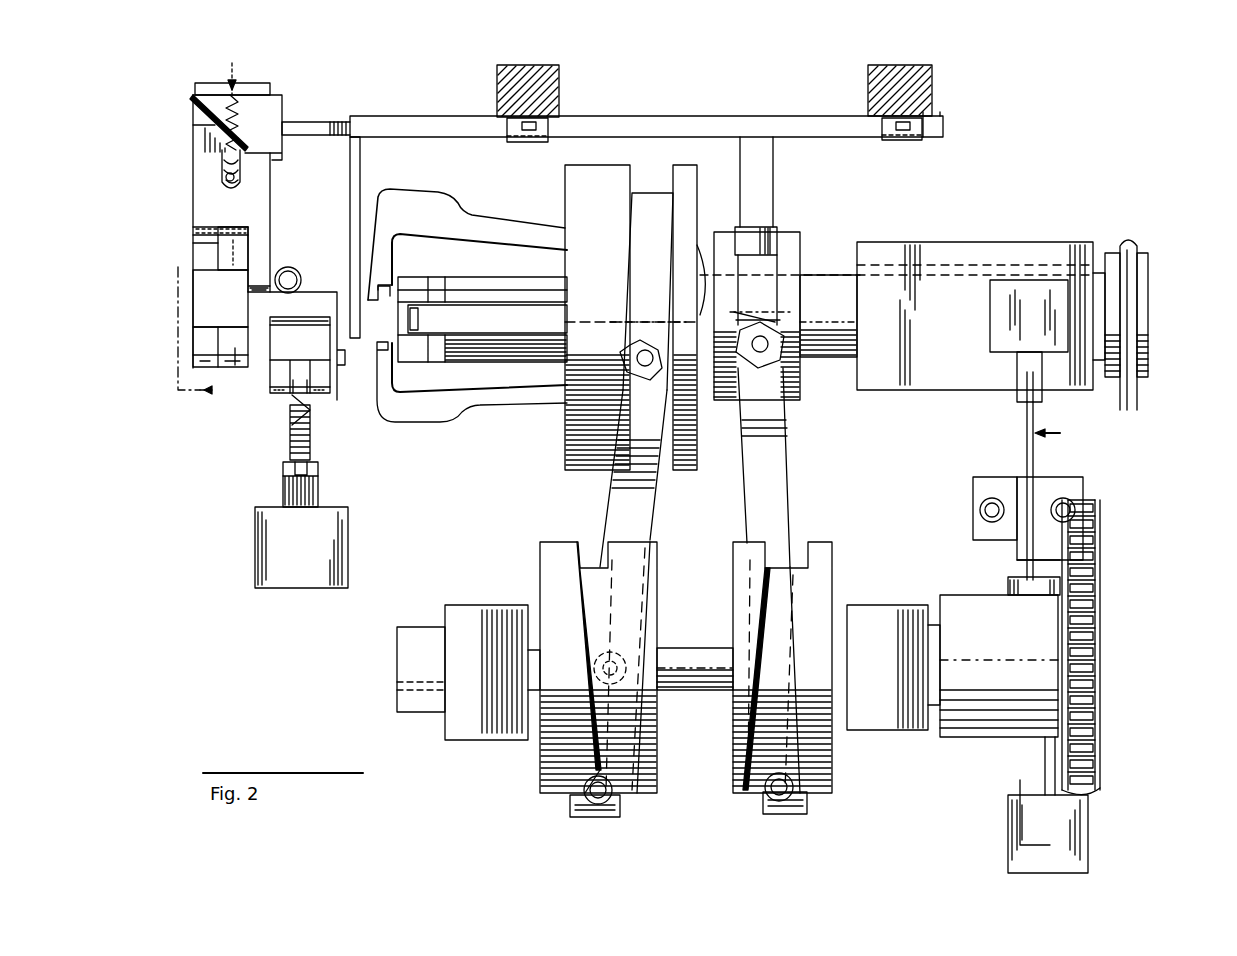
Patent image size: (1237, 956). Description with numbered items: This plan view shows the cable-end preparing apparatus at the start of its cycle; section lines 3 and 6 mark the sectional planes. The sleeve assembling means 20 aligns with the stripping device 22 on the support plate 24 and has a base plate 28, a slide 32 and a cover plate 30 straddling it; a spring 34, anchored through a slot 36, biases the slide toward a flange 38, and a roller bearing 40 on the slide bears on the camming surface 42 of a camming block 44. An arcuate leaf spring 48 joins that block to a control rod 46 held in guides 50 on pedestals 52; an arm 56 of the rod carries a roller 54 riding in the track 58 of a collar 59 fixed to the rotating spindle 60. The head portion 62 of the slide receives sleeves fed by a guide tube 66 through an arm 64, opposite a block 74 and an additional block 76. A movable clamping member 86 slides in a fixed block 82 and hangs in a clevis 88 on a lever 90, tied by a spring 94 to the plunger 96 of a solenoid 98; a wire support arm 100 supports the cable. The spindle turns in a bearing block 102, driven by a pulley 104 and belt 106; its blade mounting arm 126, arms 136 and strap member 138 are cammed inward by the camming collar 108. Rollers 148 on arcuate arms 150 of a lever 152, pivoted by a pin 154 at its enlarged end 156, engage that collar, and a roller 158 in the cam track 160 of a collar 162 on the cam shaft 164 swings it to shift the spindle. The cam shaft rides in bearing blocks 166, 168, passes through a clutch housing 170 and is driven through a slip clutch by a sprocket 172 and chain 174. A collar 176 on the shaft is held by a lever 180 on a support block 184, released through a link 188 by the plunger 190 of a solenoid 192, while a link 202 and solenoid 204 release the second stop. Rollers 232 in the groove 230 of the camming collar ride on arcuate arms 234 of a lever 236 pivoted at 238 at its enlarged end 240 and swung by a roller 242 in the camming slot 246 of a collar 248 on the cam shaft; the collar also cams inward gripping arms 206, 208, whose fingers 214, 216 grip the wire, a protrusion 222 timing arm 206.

The section line 3- 3 is at (203, 333).
The inner conductor 6 is at (1047, 634).
The sleeve assembling means 20 is at (175, 190).
The cable end stripping device 22 is at (455, 185).
The support plate 24 is at (436, 493).
The base plate 28 is at (205, 248).
The cover plate 30 is at (262, 198).
The reciprocable slide 32 is at (240, 245).
The spring 34 is at (265, 118).
The slot 36 is at (240, 176).
The flange 38 is at (205, 84).
The roller bearing 40 is at (218, 163).
The inclined camming surface 42 is at (200, 120).
The camming block 44 is at (262, 138).
The control rod 46 is at (460, 118).
The arcuate leaf spring 48 is at (360, 130).
The guides 50 is at (532, 142).
The pedestals 52 is at (540, 82).
The roller 54 is at (770, 235).
The arm 56 is at (765, 183).
The track 58 is at (770, 290).
The collar 59 is at (790, 250).
The spindle 60 is at (818, 370).
The head portion 62 is at (237, 311).
The arm 64 is at (263, 250).
The guide tube 66 is at (302, 278).
The block 74 is at (236, 365).
The additional block 76 is at (203, 345).
The fixed block 82 is at (345, 357).
The movable clamping member 86 is at (315, 357).
The clevis 88 is at (322, 382).
The lever 90 is at (288, 405).
The spring 94 is at (310, 445).
The plunger 96 is at (318, 492).
The solenoid 98 is at (330, 560).
The wire support arm 100 is at (360, 190).
The bearing block 102 is at (980, 240).
The pulley 104 is at (1140, 273).
The belt 106 is at (1150, 355).
The camming collar 108 is at (575, 208).
The mounting arm 126 is at (487, 319).
The arms 136 is at (470, 300).
The strap member 138 is at (404, 318).
The rollers 148 is at (790, 312).
The arcuate arms 150 is at (760, 412).
The lever 152 is at (775, 520).
The pin 154 is at (765, 795).
The enlarged end 156 is at (800, 814).
The roller 158 is at (830, 590).
The cam track 160 is at (805, 575).
The collar 162 is at (830, 770).
The cam shaft 164 is at (700, 640).
The bearing block 166 is at (472, 605).
The bearing block 168 is at (905, 605).
The clutch housing 170 is at (992, 667).
The sprocket 172 is at (1100, 588).
The chain 174 is at (1095, 745).
The collar 176 is at (1000, 600).
The lever 180 is at (1015, 530).
The support block 184 is at (975, 490).
The link 188 is at (1045, 465).
The plunger 190 is at (1020, 375).
The solenoid 192 is at (985, 318).
The link 202 is at (1043, 750).
The solenoid 204 is at (1030, 855).
The arm 206 is at (478, 404).
The arm 208 is at (480, 222).
The wire gripping finger 214 is at (393, 378).
The wire gripping finger 216 is at (392, 258).
The protrusion 222 is at (435, 418).
The groove 230 is at (652, 210).
The rollers 232 is at (640, 308).
The arcuate arms 234 is at (655, 472).
The lever 236 is at (645, 525).
The pivot 238 is at (612, 800).
The enlarged end 240 is at (580, 818).
The roller 242 is at (592, 655).
The camming slot 246 is at (560, 540).
The collar 248 is at (540, 775).